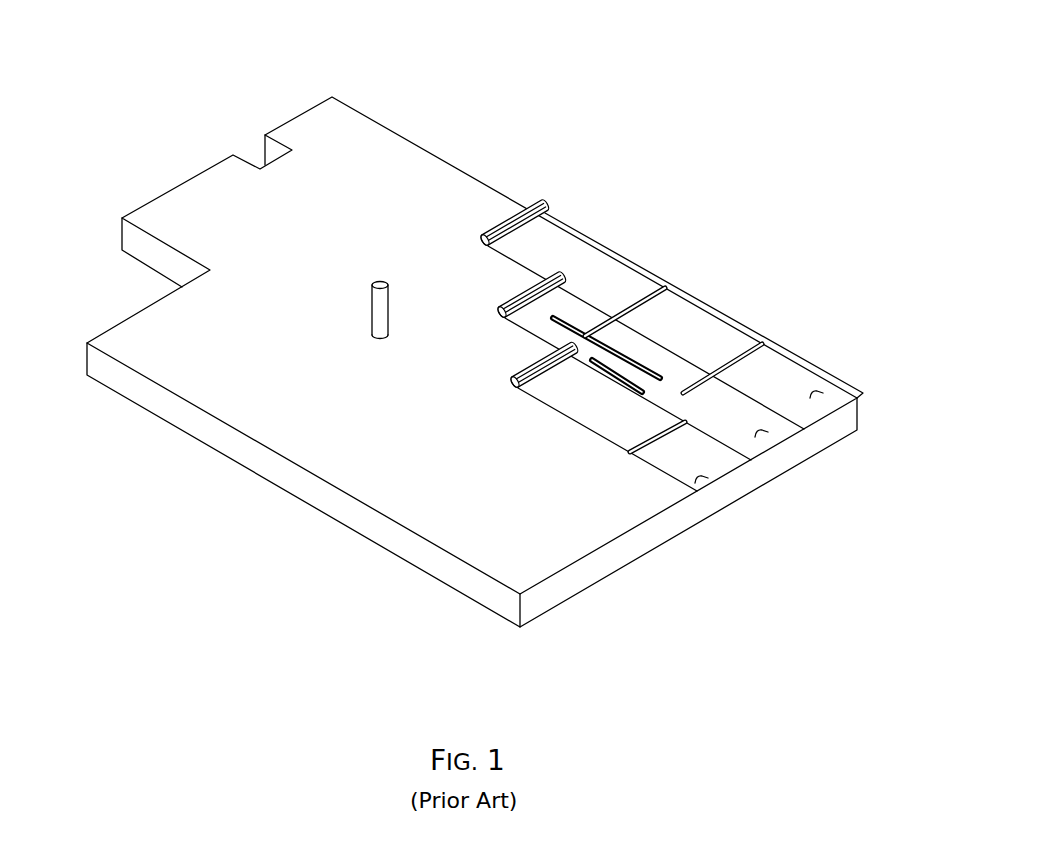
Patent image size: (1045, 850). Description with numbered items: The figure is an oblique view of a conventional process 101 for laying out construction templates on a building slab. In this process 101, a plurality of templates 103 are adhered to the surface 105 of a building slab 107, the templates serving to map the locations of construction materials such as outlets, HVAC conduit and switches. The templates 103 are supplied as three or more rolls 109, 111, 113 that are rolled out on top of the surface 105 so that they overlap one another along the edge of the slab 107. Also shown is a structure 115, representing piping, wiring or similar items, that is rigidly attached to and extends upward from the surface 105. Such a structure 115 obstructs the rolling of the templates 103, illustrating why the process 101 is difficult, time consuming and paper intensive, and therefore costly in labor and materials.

The conventional process 101 is at (487, 318).
The templates 103 is at (709, 373).
The surface 105 is at (369, 223).
The building slab 107 is at (133, 312).
The roll 109 is at (817, 393).
The roll 111 is at (763, 432).
The roll 113 is at (703, 478).
The structure 115 is at (370, 302).